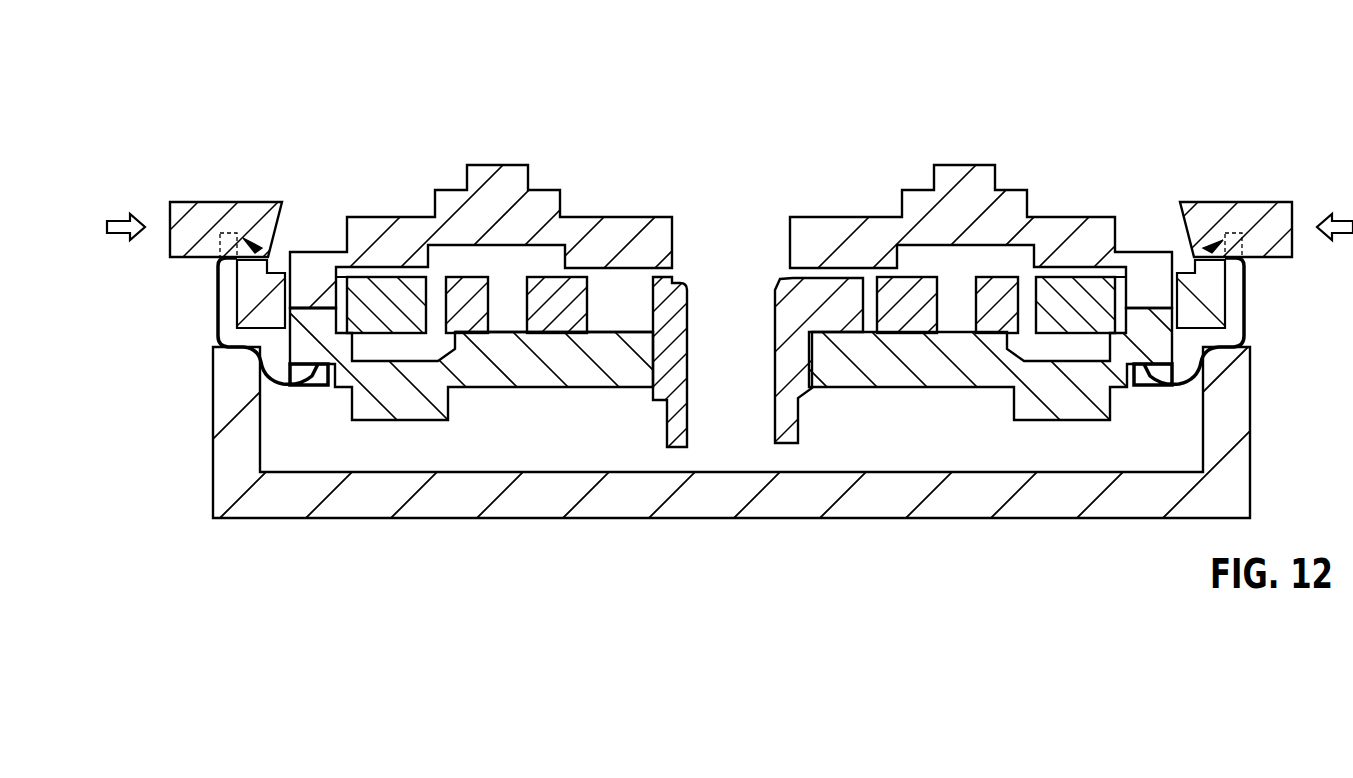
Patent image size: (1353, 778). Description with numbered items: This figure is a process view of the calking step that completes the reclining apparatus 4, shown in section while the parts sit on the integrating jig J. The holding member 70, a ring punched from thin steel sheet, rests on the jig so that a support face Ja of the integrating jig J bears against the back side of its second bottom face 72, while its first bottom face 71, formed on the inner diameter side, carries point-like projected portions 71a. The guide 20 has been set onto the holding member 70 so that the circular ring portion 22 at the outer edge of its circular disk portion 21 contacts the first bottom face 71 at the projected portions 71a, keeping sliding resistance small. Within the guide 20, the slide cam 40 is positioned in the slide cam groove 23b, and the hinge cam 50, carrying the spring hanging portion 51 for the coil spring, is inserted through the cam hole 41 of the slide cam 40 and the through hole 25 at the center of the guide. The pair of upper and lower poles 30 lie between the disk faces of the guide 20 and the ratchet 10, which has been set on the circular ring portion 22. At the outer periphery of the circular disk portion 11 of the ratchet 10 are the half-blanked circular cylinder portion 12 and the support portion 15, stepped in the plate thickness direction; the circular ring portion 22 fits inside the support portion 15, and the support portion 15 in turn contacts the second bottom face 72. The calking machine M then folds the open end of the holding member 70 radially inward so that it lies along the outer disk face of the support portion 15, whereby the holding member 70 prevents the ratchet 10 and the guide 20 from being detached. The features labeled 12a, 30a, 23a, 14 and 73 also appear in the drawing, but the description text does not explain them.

The reclining apparatus 4 is at (930, 90).
The ratchet 10 is at (1053, 243).
The circular disk portion 11 is at (848, 243).
The circular cylinder portion 12 is at (313, 280).
The housing face 12a is at (343, 293).
The center axis 14 is at (728, 246).
The support portion 15 is at (260, 300).
The guide 20 is at (955, 337).
The circular disk portion 21 is at (883, 367).
The circular ring portion 22 is at (317, 335).
The body portion 23a is at (474, 335).
The slide cam groove 23b is at (641, 320).
The through hole 25 is at (728, 361).
The poles 30 is at (395, 283).
The magnet face 30a is at (731, 305).
The slide cam 40 is at (548, 283).
The cam hole 41 is at (601, 303).
The hinge cam 50 is at (820, 282).
The spring hanging portion 51 is at (784, 431).
The holding member 70 is at (1243, 287).
The first bottom face 71 is at (734, 432).
The projected portions 71a is at (305, 375).
The second bottom face 72 is at (250, 265).
The press portion 73 is at (227, 242).
The calking machine M is at (185, 207).
The integrating jig J is at (710, 488).
The support face Ja is at (218, 327).